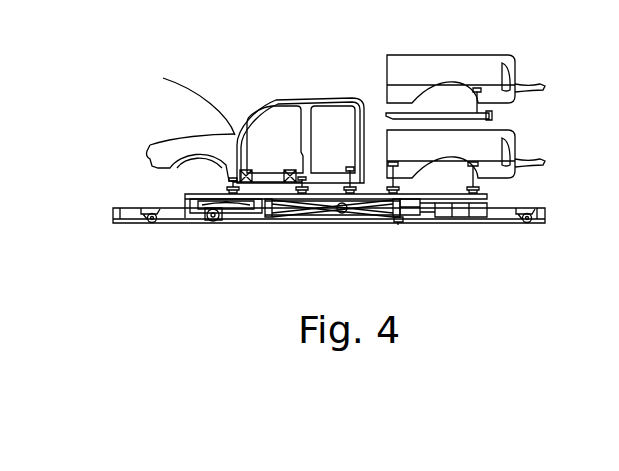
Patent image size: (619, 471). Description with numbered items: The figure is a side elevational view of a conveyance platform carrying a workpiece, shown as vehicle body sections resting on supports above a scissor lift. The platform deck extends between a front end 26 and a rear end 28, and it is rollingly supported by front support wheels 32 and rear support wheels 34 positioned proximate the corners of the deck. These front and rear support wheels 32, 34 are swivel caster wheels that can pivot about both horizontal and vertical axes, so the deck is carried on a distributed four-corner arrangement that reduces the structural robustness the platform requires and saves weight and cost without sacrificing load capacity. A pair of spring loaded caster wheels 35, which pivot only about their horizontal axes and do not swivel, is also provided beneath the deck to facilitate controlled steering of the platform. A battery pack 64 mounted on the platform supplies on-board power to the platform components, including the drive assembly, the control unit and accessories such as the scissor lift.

The front end 26 is at (116, 211).
The rear end 28 is at (543, 212).
The front support wheels 32 is at (150, 216).
The rear support wheels 34 is at (523, 219).
The spring loaded caster wheels 35 is at (398, 222).
The battery pack 64 is at (458, 218).